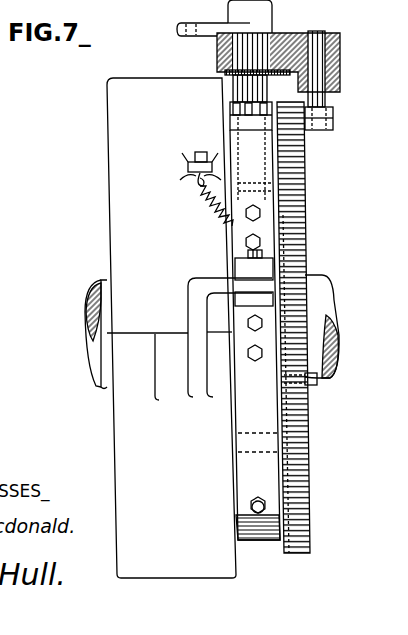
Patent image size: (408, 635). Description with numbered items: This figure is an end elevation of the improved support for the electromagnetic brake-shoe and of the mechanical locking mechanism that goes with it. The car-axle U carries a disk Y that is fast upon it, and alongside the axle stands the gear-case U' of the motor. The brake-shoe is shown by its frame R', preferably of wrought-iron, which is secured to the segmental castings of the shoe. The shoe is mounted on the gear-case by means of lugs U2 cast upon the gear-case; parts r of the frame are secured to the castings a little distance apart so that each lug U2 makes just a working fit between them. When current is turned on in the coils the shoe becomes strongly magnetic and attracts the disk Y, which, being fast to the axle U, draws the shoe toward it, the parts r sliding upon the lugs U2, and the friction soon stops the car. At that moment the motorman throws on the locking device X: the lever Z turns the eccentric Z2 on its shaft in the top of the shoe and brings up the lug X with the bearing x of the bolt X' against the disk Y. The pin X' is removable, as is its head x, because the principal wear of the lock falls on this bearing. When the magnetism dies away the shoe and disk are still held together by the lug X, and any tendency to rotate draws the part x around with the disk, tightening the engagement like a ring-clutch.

The lever Z is at (205, 22).
The eccentric Z2 is at (250, 50).
The locking device X is at (290, 62).
The removable pin X' is at (340, 71).
The head x is at (319, 128).
The disk Y is at (297, 208).
The car-axle U is at (311, 316).
The lugs U2 is at (203, 280).
The gear-case U' is at (160, 328).
The parts of the frame r is at (254, 282).
The frame R' is at (255, 328).